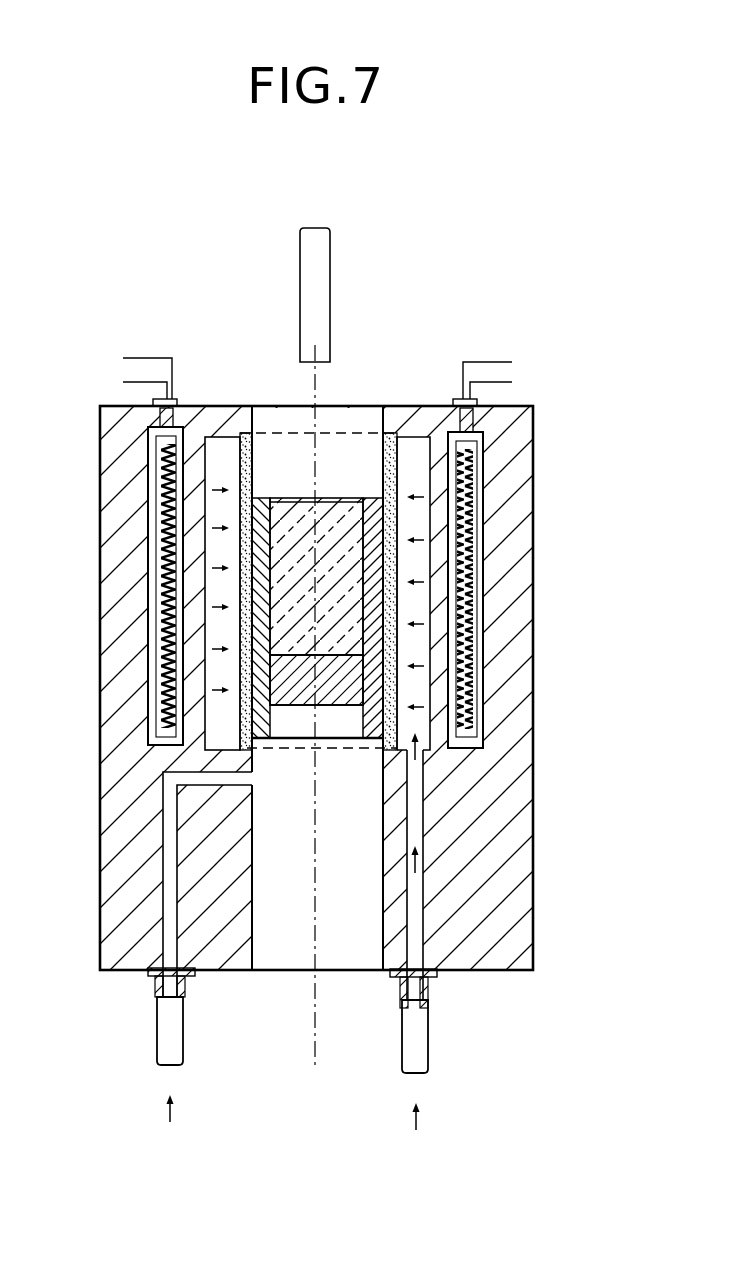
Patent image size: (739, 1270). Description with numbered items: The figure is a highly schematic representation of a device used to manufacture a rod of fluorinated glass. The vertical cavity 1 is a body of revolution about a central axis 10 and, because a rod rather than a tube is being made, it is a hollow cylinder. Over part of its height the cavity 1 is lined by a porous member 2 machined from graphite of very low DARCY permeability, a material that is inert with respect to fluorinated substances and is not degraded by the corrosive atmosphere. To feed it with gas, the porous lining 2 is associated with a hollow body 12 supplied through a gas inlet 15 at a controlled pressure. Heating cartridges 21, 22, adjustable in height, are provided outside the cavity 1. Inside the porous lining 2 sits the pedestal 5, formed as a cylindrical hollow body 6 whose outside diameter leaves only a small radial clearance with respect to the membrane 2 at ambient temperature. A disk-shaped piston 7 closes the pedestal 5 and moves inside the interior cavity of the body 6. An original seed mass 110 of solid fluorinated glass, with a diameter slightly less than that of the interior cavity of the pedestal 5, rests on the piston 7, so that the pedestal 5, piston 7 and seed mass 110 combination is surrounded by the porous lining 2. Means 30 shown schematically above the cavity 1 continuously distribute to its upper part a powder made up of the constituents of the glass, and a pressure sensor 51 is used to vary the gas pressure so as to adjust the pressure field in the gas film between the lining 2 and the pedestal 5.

The cavity 1 is at (349, 458).
The porous lining 2 is at (253, 448).
The pedestal 5 is at (303, 742).
The cylindrical hollow body 6 is at (380, 716).
The piston 7 is at (295, 690).
The axis 10 is at (313, 1033).
The hollow body 12 is at (218, 450).
The gas inlet 15 is at (418, 1043).
The heating cartridge 21 is at (167, 585).
The heating cartridge 22 is at (460, 553).
The powder distributing means 30 is at (310, 298).
The pressure sensor 51 is at (177, 1038).
The seed mass 110 is at (290, 512).